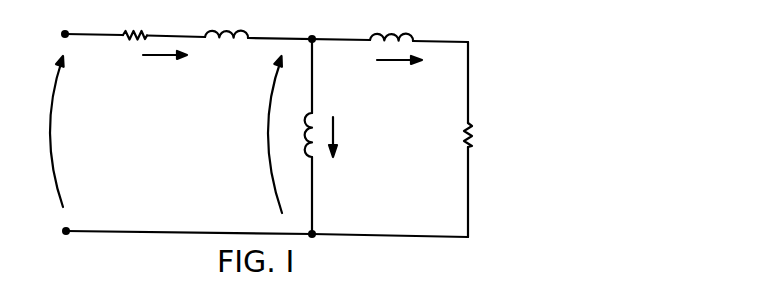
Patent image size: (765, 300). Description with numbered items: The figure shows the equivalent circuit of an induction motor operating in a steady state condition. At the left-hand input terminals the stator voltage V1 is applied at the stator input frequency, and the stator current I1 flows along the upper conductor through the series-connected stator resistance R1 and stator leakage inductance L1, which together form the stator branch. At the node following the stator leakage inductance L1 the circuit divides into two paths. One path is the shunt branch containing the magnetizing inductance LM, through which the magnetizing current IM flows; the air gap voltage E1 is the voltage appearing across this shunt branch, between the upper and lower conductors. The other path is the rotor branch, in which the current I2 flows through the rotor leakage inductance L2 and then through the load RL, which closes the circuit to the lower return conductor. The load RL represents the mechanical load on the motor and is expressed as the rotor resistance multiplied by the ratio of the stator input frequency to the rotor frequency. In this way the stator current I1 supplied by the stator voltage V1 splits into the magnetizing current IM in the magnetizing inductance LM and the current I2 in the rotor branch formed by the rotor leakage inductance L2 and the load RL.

The stator resistance R1 is at (131, 29).
The stator leakage inductance L1 is at (225, 28).
The rotor leakage inductance L2 is at (393, 33).
The magnetizing inductance LM is at (306, 139).
The load RL is at (472, 135).
The stator current I1 is at (160, 61).
The rotor current I2 is at (394, 64).
The magnetizing current IM is at (348, 120).
The stator voltage V1 is at (33, 123).
The air gap voltage E1 is at (250, 113).